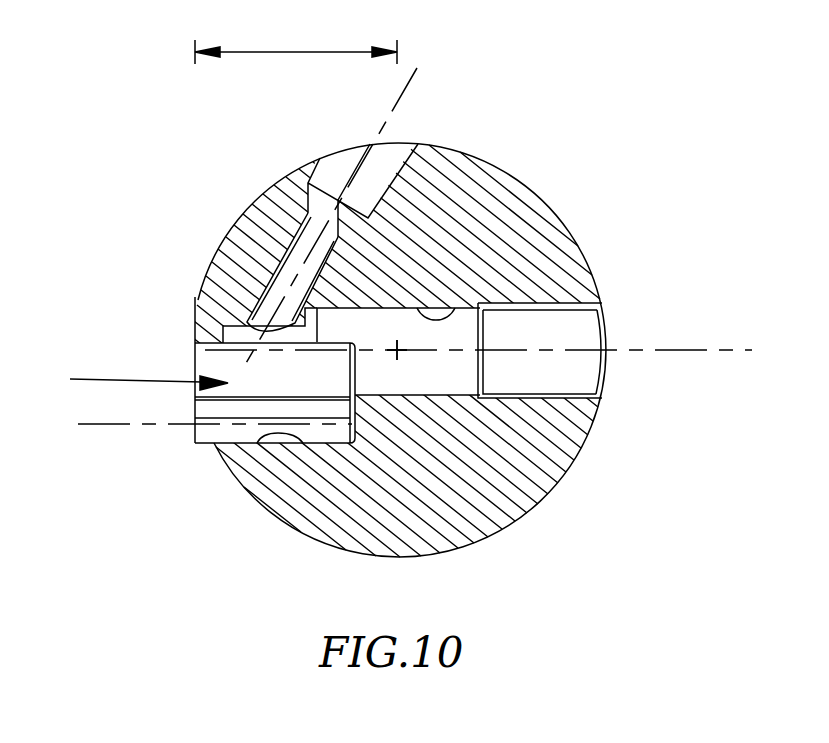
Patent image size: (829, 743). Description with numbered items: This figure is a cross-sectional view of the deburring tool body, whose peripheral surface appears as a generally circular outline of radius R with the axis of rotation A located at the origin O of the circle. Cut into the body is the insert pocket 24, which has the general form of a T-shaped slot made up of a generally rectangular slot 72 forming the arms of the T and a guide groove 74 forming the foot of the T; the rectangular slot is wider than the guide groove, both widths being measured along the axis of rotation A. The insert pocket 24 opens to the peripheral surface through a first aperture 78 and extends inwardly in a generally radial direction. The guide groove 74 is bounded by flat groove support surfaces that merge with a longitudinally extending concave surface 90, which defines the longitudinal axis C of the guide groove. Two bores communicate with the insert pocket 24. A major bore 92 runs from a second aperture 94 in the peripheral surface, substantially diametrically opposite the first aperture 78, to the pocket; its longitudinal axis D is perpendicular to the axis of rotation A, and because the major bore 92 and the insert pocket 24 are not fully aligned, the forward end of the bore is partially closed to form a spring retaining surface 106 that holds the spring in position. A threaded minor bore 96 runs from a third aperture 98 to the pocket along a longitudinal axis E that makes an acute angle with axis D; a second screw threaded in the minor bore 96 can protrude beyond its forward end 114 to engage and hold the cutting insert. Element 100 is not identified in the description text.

The insert pocket 24 is at (131, 379).
The generally rectangular slot 72 is at (207, 365).
The guide groove 74 is at (220, 432).
The first aperture 78 is at (195, 356).
The concave surface 90 is at (265, 436).
The major bore 92 is at (460, 307).
The second aperture 94 is at (613, 373).
The threaded minor bore 96 is at (270, 275).
The third aperture 98 is at (396, 147).
The outlet bore 100 is at (548, 305).
The spring retaining surface 106 is at (305, 335).
The forward end of the minor bore 114 is at (207, 272).
The axis of rotation A is at (396, 355).
The longitudinal axis of the guide groove C is at (117, 425).
The longitudinal axis of the major bore D is at (728, 350).
The longitudinal axis of the minor bore E is at (407, 88).
The origin O is at (399, 353).
The radius R is at (296, 42).